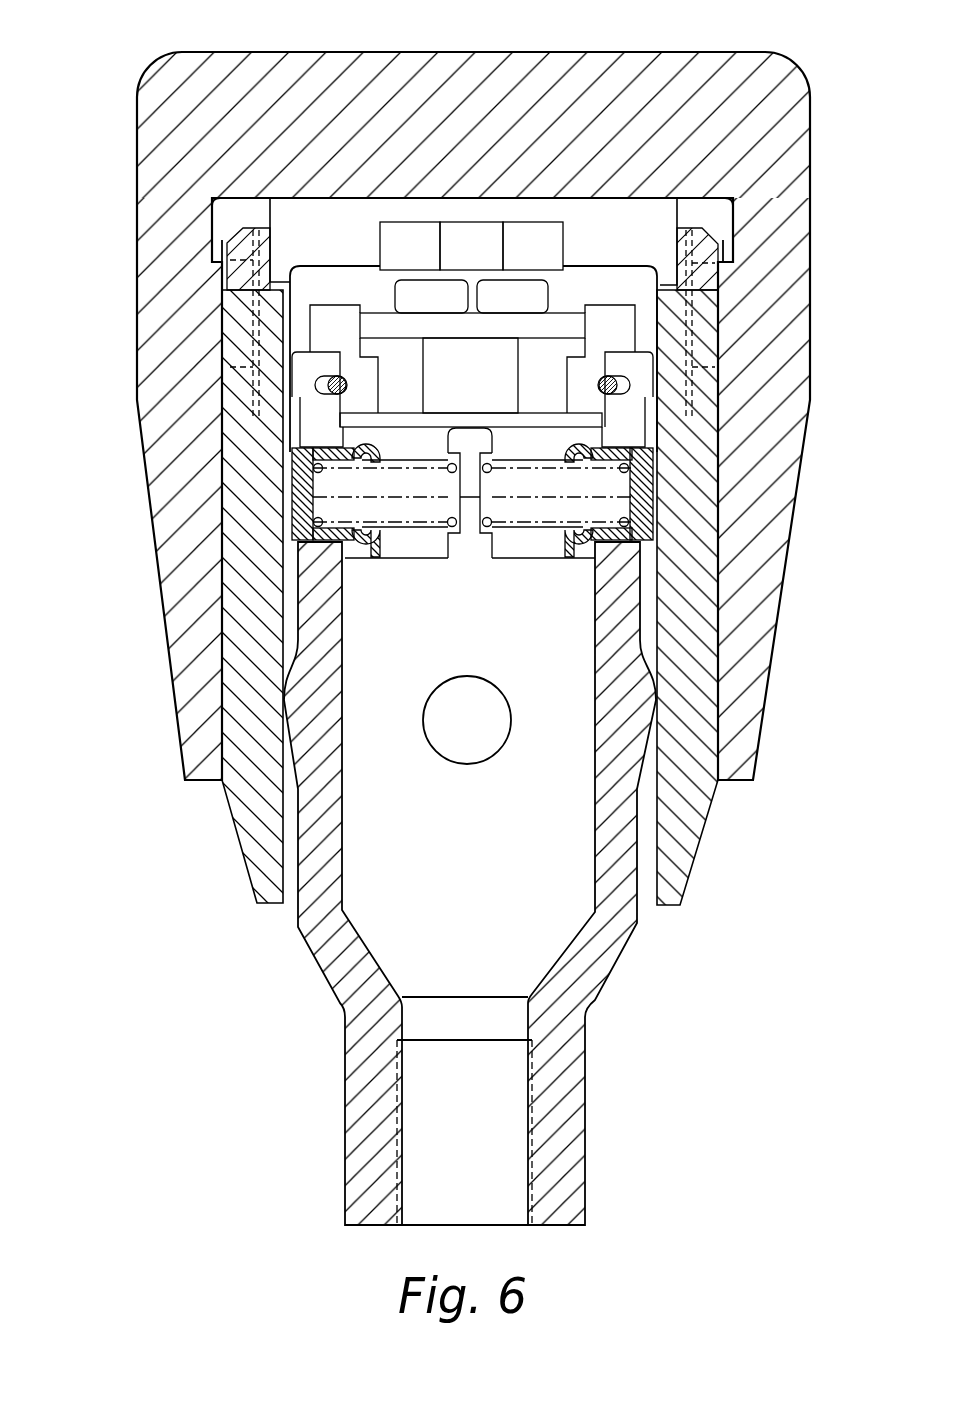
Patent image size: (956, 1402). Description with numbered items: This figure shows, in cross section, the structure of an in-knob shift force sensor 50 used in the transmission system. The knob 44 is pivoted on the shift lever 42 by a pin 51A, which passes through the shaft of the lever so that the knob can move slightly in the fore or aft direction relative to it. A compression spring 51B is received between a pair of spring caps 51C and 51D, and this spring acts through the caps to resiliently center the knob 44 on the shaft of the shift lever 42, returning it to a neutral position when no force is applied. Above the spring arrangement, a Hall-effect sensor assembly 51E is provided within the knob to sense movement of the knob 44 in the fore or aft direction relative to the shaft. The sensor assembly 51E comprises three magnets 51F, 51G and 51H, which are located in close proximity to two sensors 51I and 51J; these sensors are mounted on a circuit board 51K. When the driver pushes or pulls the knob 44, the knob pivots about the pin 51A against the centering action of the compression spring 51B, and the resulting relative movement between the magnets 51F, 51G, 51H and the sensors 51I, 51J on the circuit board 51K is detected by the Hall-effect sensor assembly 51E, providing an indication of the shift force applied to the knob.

The in-knob shift force sensor 50 is at (97, 183).
The knob 44 is at (158, 388).
The shift lever 42 is at (333, 953).
The pin 51A is at (487, 747).
The compression spring 51B is at (370, 497).
The spring cap 51C is at (300, 512).
The spring cap 51D is at (655, 512).
The Hall-effect sensor assembly 51E is at (366, 176).
The magnet 51F is at (410, 237).
The magnet 51G is at (470, 237).
The magnet 51H is at (530, 240).
The sensor 51I is at (408, 295).
The sensor 51J is at (538, 297).
The circuit board 51K is at (457, 332).